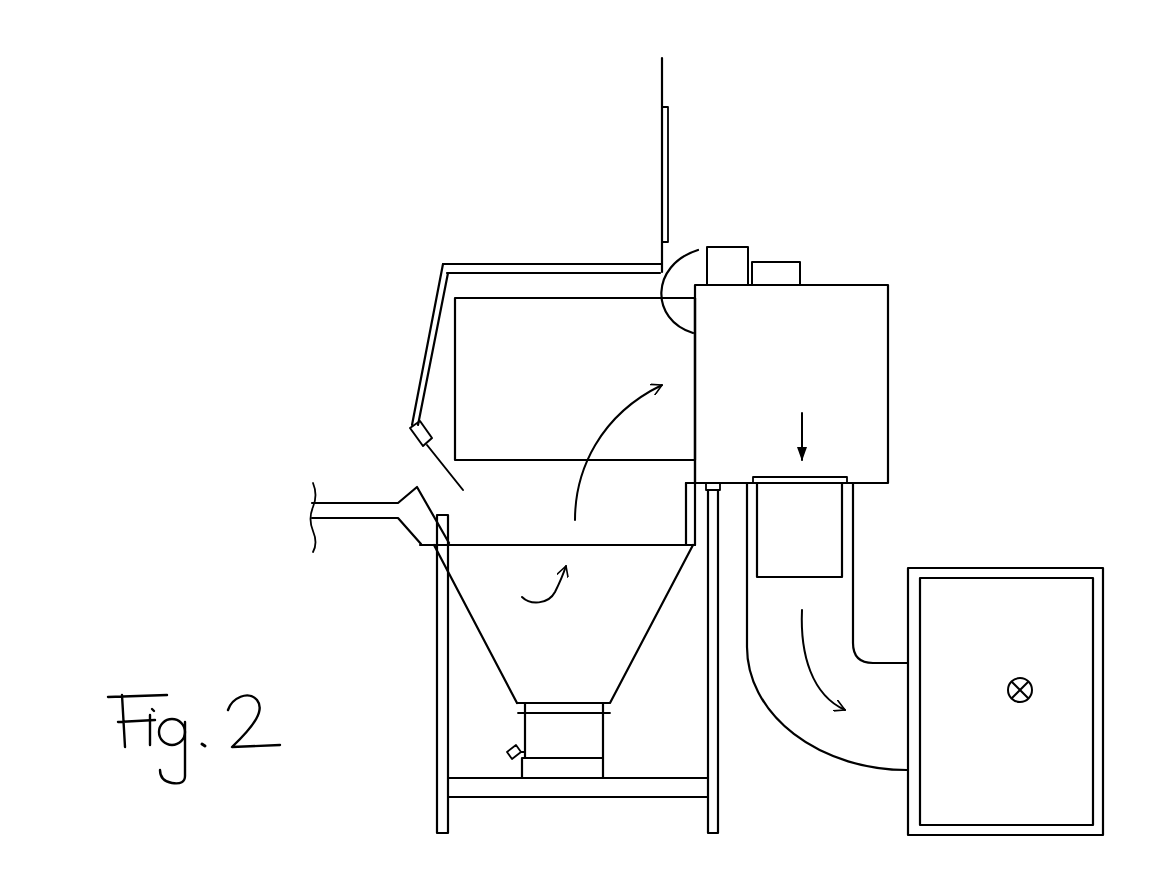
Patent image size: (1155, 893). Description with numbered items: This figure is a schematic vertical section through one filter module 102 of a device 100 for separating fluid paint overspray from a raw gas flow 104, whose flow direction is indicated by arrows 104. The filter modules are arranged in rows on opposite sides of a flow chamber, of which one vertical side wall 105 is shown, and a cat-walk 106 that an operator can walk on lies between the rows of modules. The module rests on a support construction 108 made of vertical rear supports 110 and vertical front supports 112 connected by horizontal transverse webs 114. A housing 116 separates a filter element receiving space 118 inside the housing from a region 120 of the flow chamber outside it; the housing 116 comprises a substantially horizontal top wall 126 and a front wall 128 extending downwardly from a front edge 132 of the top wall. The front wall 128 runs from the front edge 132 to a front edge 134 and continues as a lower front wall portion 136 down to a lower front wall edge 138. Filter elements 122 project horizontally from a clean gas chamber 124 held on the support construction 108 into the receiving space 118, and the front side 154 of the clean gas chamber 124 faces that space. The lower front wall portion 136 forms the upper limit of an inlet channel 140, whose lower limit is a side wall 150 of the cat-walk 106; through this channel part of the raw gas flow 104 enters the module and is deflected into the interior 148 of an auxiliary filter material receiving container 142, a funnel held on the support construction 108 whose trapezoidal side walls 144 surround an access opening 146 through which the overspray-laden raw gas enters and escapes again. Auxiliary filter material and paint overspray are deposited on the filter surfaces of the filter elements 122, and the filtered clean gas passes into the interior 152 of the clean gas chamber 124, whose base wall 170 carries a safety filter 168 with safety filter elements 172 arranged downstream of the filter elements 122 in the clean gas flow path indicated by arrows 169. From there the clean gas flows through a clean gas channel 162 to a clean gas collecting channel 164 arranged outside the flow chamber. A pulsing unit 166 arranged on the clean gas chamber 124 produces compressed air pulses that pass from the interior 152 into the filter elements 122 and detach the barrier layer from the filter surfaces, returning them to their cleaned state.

The device for separating fluid paint overspray 100 is at (418, 175).
The filter module 102 is at (420, 260).
The raw gas flow 104 is at (415, 463).
The vertical side wall 105 is at (663, 100).
The cat-walk 106 is at (345, 512).
The support construction 108 is at (418, 646).
The rear supports 110 is at (712, 737).
The front supports 112 is at (438, 745).
The horizontal transverse webs 114 is at (490, 786).
The housing 116 is at (479, 270).
The filter element receiving space 118 is at (548, 292).
The region of the flow chamber 120 is at (400, 330).
The filter elements 122 is at (578, 386).
The clean gas chamber 124 is at (860, 313).
The top wall 126 is at (582, 270).
The front wall 128 is at (426, 362).
The front edge of the top wall 132 is at (442, 264).
The front edge of the front wall 134 is at (413, 427).
The lower front wall portion 136 is at (440, 494).
The lower front wall edge 138 is at (466, 489).
The inlet channel 140 is at (473, 518).
The auxiliary filter material receiving container 142 is at (487, 655).
The trapezoidal side walls 144 is at (496, 663).
The access opening 146 is at (582, 543).
The interior of the auxiliary filter material receiving container 148 is at (595, 682).
The side wall of the cat-walk 150 is at (444, 531).
The interior of the clean gas chamber 152 is at (822, 396).
The front side of the clean gas chamber 154 is at (698, 250).
The clean gas channel 162 is at (857, 530).
The clean gas collecting channel 164 is at (1035, 568).
The pulsing unit 166 is at (732, 267).
The safety filter 168 is at (845, 502).
The arrows indicating the clean gas flow path 169 is at (802, 432).
The base wall of the clean gas chamber 170 is at (867, 480).
The safety filter element 172 is at (813, 550).